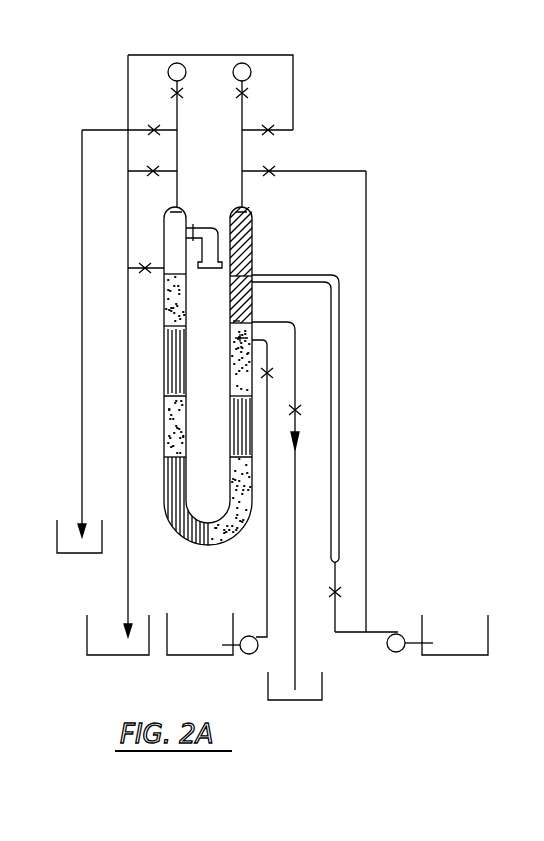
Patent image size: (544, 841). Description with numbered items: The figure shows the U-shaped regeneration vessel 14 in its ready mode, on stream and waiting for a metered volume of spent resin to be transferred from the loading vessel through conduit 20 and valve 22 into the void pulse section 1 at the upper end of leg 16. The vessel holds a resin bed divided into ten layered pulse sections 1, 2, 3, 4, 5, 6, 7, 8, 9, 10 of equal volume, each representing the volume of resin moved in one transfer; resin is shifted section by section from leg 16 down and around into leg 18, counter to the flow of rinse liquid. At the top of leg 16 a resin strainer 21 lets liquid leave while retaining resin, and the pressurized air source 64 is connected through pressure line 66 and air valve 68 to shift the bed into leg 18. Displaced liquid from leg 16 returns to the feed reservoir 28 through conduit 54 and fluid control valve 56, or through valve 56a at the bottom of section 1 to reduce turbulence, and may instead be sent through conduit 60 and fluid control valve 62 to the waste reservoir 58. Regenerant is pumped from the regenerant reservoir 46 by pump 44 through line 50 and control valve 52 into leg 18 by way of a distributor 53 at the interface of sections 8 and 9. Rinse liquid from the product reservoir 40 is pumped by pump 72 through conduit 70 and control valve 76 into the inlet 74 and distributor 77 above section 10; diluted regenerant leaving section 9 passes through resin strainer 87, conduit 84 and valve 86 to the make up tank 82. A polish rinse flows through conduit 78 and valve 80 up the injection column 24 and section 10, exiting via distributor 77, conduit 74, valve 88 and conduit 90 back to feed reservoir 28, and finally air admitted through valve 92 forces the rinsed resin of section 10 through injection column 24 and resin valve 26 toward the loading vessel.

The pulse section 1 is at (175, 248).
The pulse section 2 is at (175, 301).
The pulse section 3 is at (175, 362).
The pulse section 4 is at (175, 429).
The pulse section 5 is at (186, 501).
The pulse section 6 is at (231, 499).
The pulse section 7 is at (241, 427).
The pulse section 8 is at (241, 363).
The pulse section 9 is at (242, 298).
The pulse section 10 is at (242, 242).
The regeneration vessel 14 is at (188, 550).
The leg 16 is at (163, 215).
The leg 18 is at (254, 218).
The conduit 20 is at (205, 232).
The resin strainer 21 is at (172, 206).
The valve 22 is at (193, 224).
The injection column 24 is at (315, 275).
The resin valve 26 is at (535, 553).
The feed reservoir 28 is at (87, 657).
The product reservoir 40 is at (491, 640).
The pump 44 is at (250, 655).
The regenerant reservoir 46 is at (167, 657).
The line 50 is at (266, 591).
The control valve 52 is at (286, 363).
The distributor 53 is at (235, 339).
The conduit 54 is at (127, 348).
The fluid control valve 56 is at (155, 166).
The valve 56a is at (146, 264).
The waste reservoir 58 is at (102, 522).
The conduit 60 is at (84, 300).
The fluid control valve 62 is at (156, 124).
The pressurized air source 64 is at (168, 73).
The pressure line 66 is at (179, 139).
The air valve 68 is at (185, 94).
The conduit 70 is at (368, 535).
The pump 72 is at (389, 646).
The inlet 74 is at (240, 161).
The control valve 76 is at (270, 166).
The distributor 77 is at (246, 206).
The conduit 78 is at (332, 568).
The valve 80 is at (331, 595).
The make up tank 82 is at (325, 673).
The conduit 84 is at (289, 322).
The valve 86 is at (303, 407).
The resin strainer 87 is at (237, 322).
The valve 88 is at (277, 115).
The conduit 90 is at (263, 55).
The valve 92 is at (250, 94).